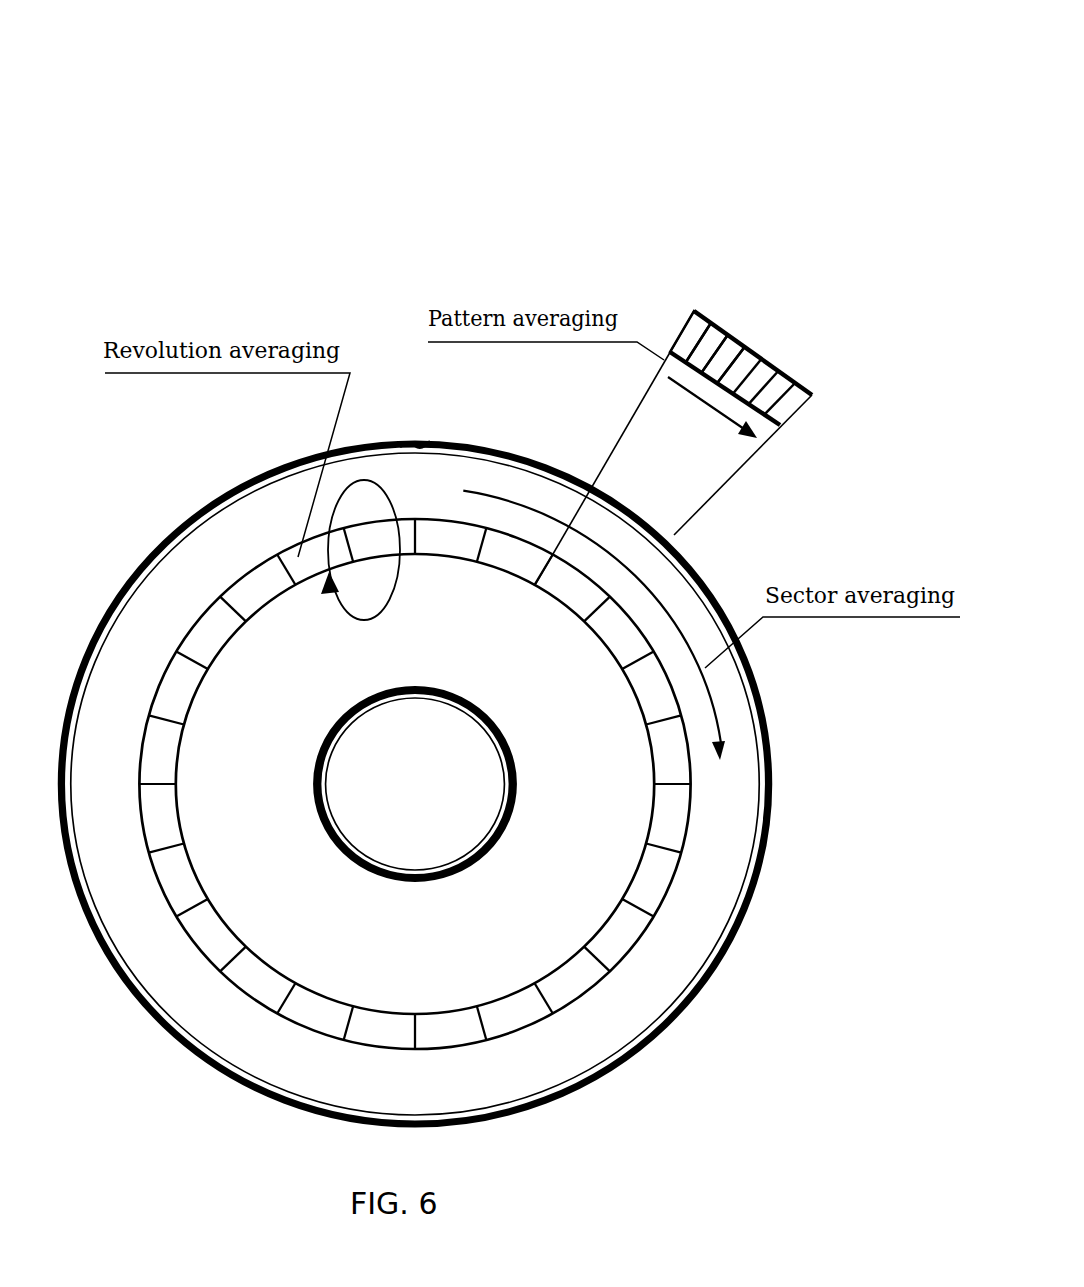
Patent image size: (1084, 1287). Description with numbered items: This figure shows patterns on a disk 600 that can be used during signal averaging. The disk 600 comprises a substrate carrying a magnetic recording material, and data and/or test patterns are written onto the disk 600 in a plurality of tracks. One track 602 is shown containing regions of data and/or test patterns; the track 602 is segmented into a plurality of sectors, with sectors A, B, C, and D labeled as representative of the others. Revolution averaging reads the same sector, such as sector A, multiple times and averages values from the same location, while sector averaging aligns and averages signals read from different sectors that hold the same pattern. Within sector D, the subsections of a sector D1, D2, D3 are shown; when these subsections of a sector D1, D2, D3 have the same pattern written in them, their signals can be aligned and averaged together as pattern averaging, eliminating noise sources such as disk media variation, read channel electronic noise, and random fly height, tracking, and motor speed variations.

The disk 600 is at (158, 573).
The track 602 is at (486, 1012).
The subsection of a sector D1 is at (692, 312).
The subsection of a sector D2 is at (725, 333).
The subsection of a sector D3 is at (748, 332).